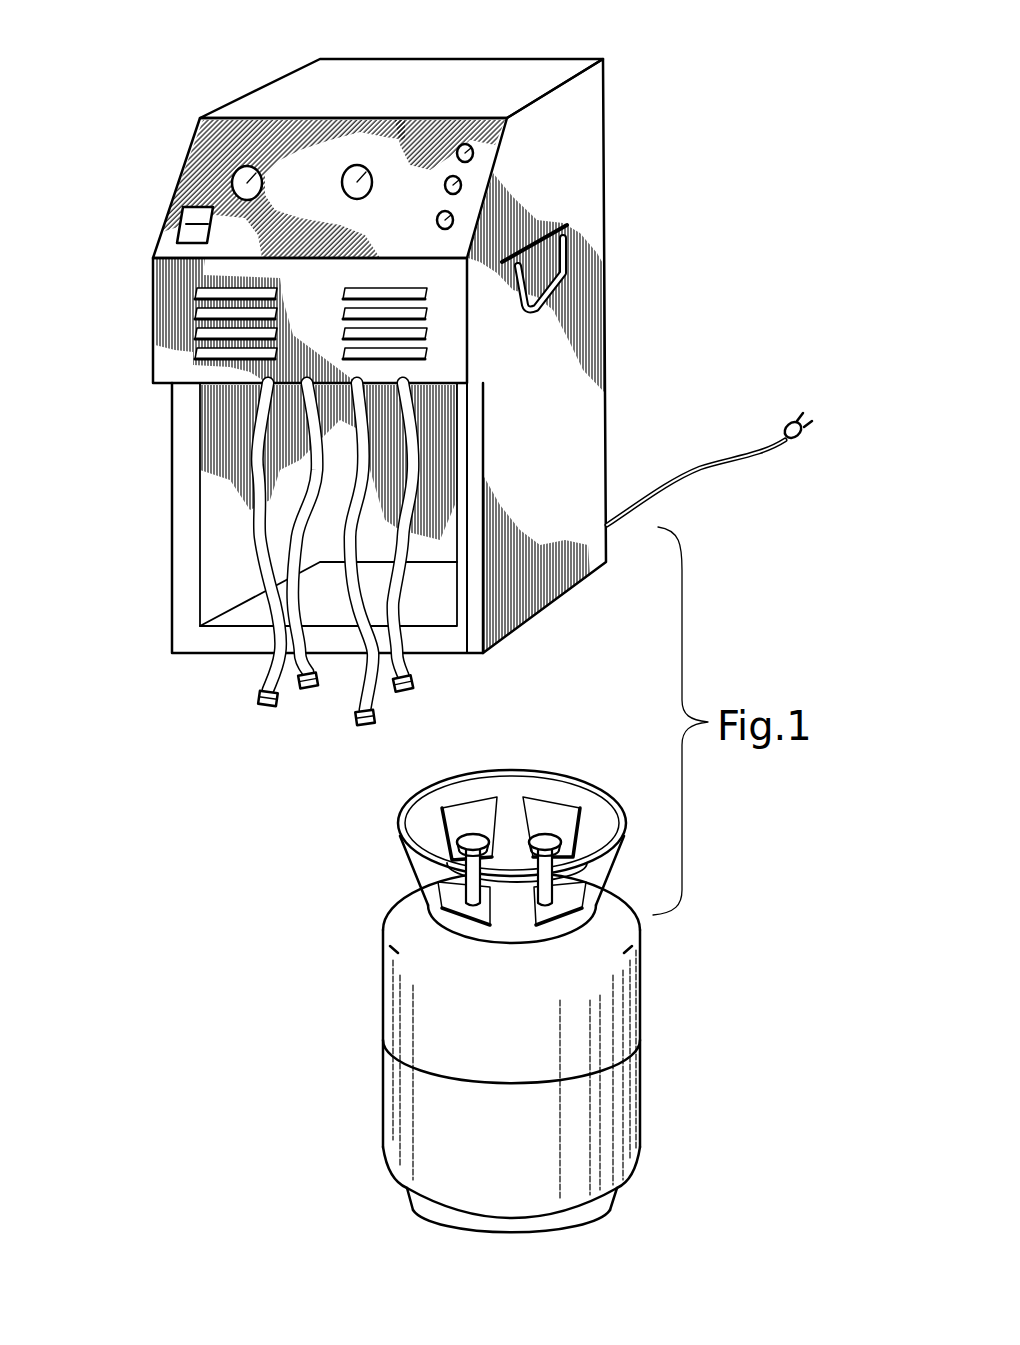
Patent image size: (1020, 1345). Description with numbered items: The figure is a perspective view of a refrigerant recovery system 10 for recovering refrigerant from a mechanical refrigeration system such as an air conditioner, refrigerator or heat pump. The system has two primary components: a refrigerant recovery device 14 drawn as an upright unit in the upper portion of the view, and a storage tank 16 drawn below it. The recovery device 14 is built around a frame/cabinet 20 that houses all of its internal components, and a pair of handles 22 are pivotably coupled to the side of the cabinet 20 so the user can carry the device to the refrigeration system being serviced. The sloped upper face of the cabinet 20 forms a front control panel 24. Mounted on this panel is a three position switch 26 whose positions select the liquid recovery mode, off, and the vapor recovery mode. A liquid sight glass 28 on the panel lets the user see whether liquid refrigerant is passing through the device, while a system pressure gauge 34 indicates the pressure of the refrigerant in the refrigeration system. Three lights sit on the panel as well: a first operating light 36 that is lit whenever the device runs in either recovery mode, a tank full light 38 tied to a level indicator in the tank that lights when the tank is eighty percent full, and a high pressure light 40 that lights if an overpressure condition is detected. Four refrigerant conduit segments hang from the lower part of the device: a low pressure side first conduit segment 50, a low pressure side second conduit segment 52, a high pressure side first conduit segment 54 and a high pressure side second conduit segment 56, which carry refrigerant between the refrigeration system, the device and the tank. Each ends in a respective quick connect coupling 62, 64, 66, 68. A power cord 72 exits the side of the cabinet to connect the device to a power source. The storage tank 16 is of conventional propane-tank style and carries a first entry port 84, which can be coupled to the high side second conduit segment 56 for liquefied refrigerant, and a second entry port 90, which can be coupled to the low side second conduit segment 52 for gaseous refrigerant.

The refrigerant recovery system 10 is at (797, 357).
The refrigerant recovery device 14 is at (138, 312).
The storage tank 16 is at (673, 975).
The frame/cabinet 20 is at (608, 385).
The handles 22 is at (565, 278).
The front control panel 24 is at (260, 143).
The three position switch 26 is at (188, 219).
The liquid sight glass 28 is at (232, 168).
The system pressure gauge 34 is at (345, 163).
The first operating light 36 is at (473, 145).
The tank full light 38 is at (461, 178).
The high pressure light 40 is at (453, 213).
The low pressure side first conduit segment 50 is at (272, 670).
The low pressure side second conduit segment 52 is at (300, 642).
The high pressure side first conduit segment 54 is at (356, 580).
The high pressure side second conduit segment 56 is at (411, 569).
The quick connect coupling 62 is at (260, 704).
The quick connect coupling 64 is at (308, 694).
The quick connect coupling 66 is at (364, 731).
The quick connect coupling 68 is at (406, 694).
The power cord 72 is at (718, 470).
The first entry port 84 is at (545, 834).
The second entry port 90 is at (473, 834).